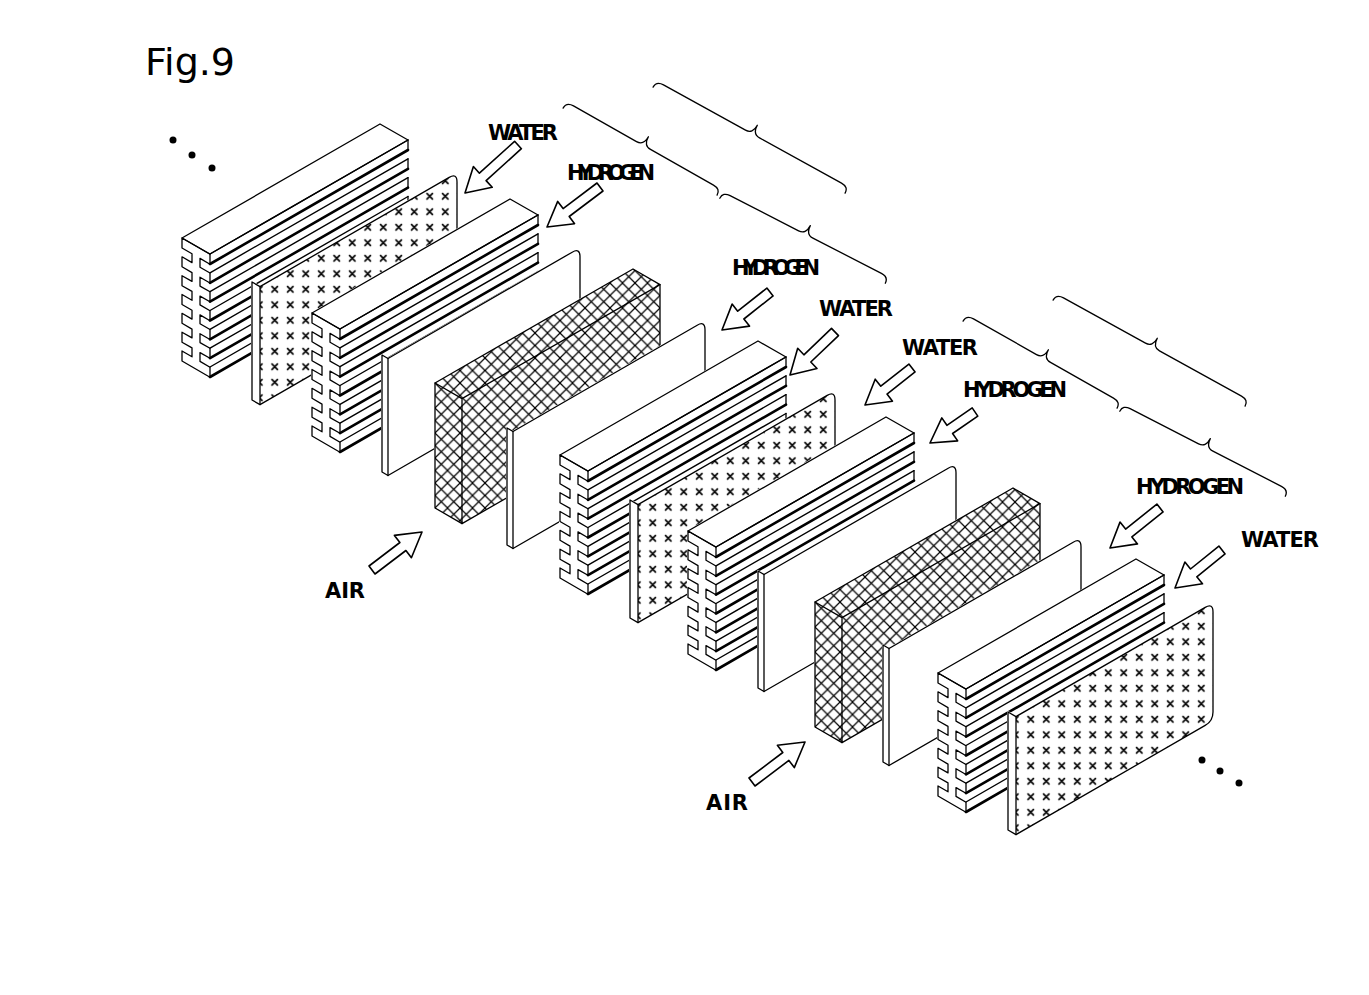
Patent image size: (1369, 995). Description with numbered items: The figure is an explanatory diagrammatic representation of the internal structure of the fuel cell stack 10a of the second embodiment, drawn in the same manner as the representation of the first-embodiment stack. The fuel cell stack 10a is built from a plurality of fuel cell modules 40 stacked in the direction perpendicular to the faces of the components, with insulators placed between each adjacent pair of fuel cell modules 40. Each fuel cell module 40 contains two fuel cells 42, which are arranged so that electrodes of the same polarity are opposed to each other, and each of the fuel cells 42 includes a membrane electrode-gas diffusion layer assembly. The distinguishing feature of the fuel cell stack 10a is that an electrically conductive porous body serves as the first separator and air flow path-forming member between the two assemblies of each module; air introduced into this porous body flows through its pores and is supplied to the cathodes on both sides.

The fuel cell stack 10a is at (995, 144).
The fuel cell module 40 is at (949, 244).
The fuel cell 42 is at (924, 300).